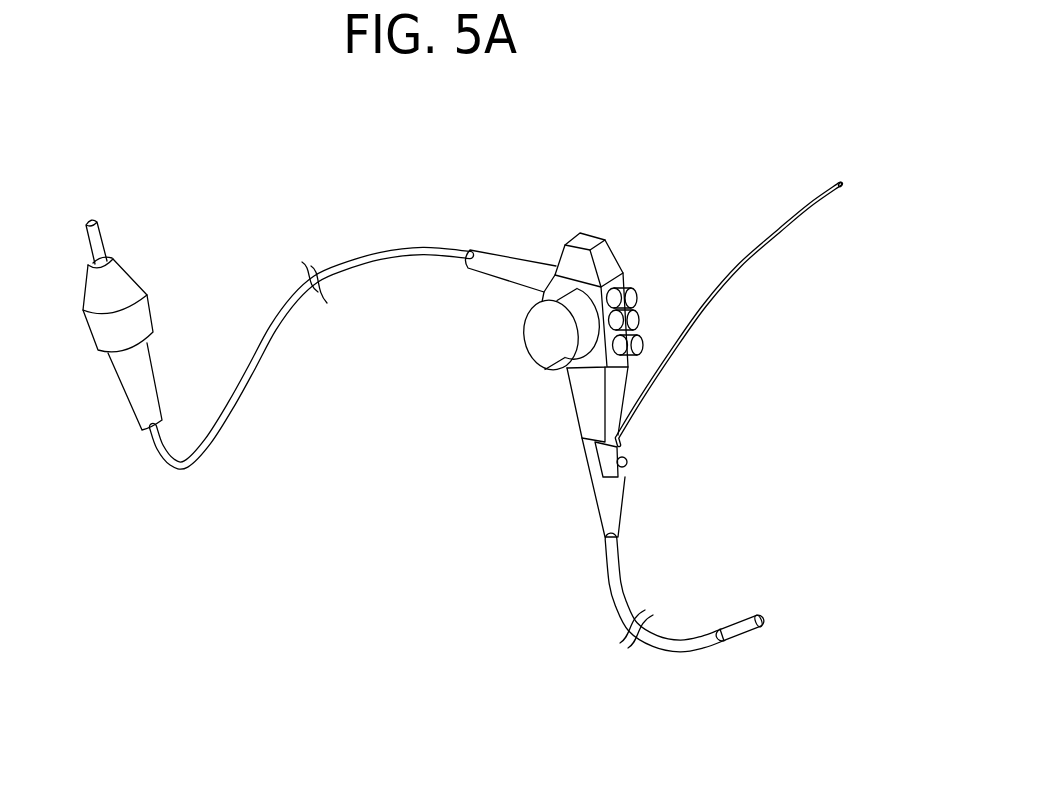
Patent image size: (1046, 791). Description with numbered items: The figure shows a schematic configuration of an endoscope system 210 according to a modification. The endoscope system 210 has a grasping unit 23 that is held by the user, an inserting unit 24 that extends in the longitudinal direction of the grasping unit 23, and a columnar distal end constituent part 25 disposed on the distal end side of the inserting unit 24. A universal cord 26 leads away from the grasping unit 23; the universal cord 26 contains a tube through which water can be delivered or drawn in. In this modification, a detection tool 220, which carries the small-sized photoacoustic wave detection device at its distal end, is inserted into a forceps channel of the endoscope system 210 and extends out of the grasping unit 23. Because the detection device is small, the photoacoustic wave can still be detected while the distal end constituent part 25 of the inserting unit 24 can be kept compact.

The endoscope system 210 is at (653, 164).
The detection tool 220 is at (722, 291).
The grasping unit 23 is at (503, 301).
The inserting unit 24 is at (531, 551).
The distal end constituent part 25 is at (756, 644).
The universal cord 26 is at (385, 247).